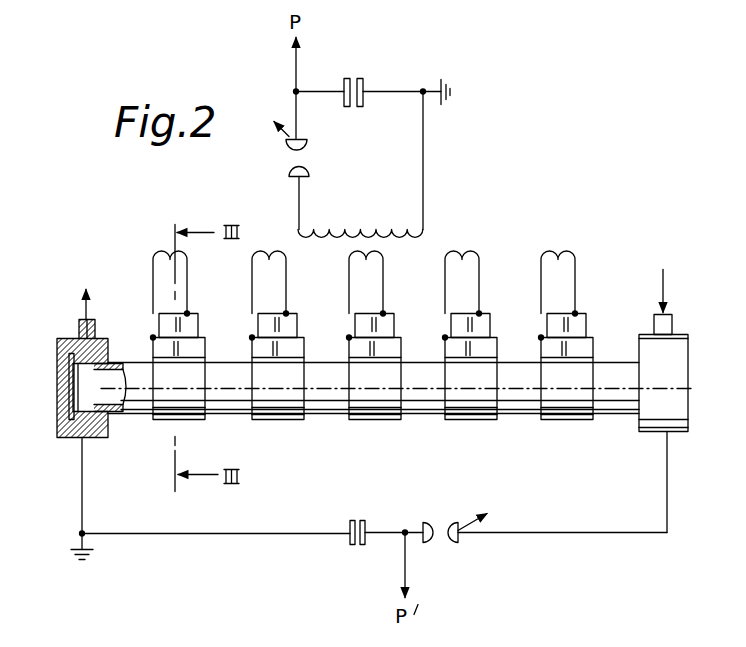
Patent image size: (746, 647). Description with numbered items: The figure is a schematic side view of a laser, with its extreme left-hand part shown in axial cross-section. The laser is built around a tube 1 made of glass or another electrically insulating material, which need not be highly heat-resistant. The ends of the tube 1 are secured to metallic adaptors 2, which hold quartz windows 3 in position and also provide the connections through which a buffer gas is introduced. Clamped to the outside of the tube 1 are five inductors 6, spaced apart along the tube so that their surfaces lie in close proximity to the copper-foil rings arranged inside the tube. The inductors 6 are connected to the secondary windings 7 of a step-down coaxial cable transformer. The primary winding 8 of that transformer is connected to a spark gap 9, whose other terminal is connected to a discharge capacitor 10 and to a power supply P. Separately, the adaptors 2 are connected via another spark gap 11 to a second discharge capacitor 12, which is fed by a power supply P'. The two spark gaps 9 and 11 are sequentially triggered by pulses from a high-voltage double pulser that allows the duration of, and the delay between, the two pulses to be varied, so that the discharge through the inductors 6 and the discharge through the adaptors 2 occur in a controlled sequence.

The tube 1 is at (424, 415).
The metallic adaptors 2 is at (96, 437).
The quartz windows 3 is at (55, 382).
The inductors 6 is at (358, 396).
The secondary windings 7 is at (473, 246).
The primary winding 8 is at (360, 228).
The spark gap 9 is at (301, 155).
The discharge capacitor 10 is at (352, 75).
The spark gap 11 is at (443, 522).
The discharge capacitor 12 is at (352, 545).